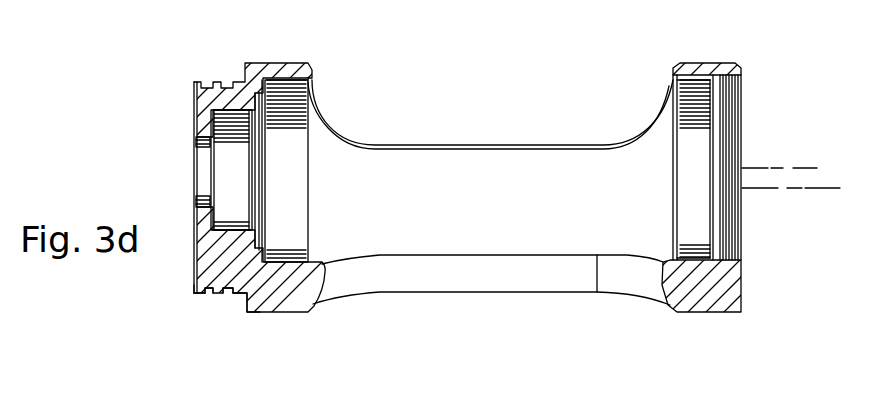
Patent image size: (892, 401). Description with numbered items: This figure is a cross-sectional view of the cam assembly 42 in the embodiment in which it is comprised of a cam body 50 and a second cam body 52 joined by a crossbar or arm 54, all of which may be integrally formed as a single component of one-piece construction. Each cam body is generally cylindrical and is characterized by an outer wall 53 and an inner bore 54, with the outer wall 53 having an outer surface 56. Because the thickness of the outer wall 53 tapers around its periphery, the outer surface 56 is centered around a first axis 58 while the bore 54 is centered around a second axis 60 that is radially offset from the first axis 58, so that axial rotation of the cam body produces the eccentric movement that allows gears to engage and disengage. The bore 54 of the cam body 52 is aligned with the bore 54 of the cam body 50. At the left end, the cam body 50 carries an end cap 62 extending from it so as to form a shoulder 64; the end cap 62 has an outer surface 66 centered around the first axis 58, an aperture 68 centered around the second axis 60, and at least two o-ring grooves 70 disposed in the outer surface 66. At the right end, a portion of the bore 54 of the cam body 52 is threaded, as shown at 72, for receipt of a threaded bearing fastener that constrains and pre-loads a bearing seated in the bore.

The cam assembly 42 is at (501, 313).
The cam body 50 is at (241, 59).
The cam body 52 is at (670, 72).
The outer wall 53 is at (293, 295).
The inner bore 54 is at (297, 252).
The outer surface 56 is at (283, 62).
The first axis 58 is at (778, 189).
The second axis 60 is at (770, 167).
The end cap 62 is at (172, 79).
The shoulder 64 is at (236, 312).
The outer surface 66 is at (198, 296).
The aperture 68 is at (207, 146).
The o-ring grooves 70 is at (224, 296).
The threaded portion of bore 72 is at (733, 90).